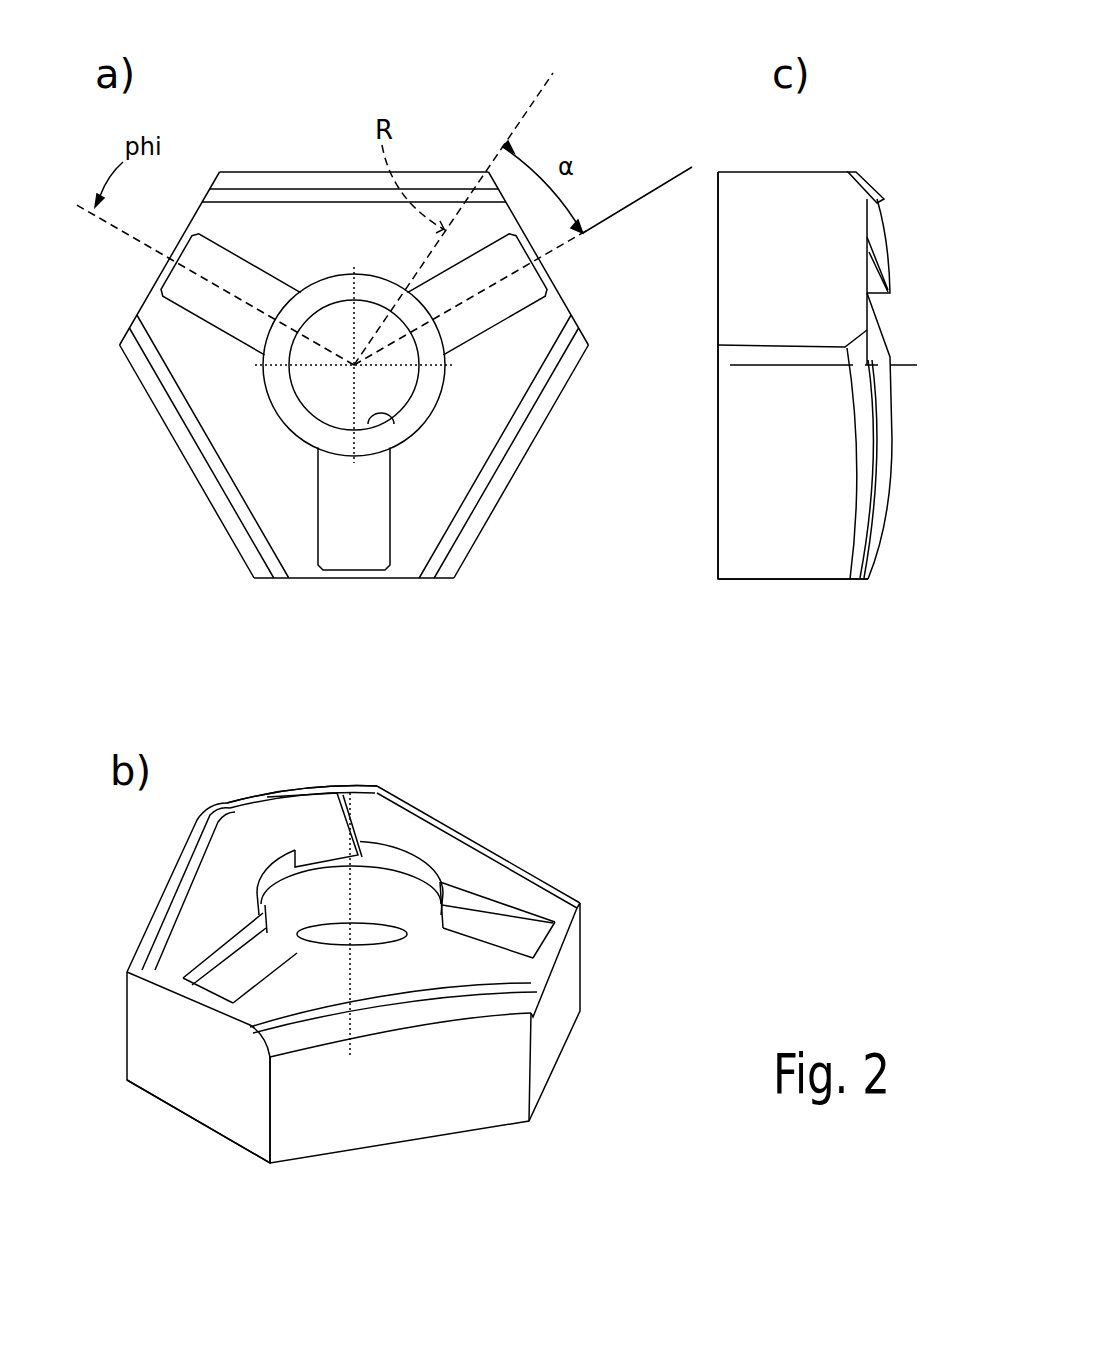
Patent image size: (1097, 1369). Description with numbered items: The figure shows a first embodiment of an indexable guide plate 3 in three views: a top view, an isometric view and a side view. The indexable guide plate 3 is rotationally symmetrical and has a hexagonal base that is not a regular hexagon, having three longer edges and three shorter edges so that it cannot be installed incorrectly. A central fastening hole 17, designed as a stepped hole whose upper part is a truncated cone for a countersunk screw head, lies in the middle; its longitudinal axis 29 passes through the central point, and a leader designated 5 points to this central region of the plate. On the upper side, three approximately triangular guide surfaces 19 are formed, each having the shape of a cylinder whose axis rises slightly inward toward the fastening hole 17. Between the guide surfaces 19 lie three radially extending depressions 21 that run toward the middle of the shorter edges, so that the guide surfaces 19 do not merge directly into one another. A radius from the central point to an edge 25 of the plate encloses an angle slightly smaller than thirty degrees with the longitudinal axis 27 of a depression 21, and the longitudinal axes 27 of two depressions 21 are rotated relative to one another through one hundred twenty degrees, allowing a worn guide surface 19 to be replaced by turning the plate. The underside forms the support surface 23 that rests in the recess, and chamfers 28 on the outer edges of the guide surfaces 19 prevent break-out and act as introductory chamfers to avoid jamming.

The indexable guide plate 3 is at (505, 546).
The central fastening hole 5 is at (347, 322).
The central fastening hole 17 is at (394, 422).
The guide surfaces 19 is at (288, 213).
The depressions 21 is at (510, 287).
The support surface 23 is at (717, 536).
The edge 25 is at (505, 148).
The longitudinal axis of a depression 27 is at (613, 209).
The chamfers 28 is at (852, 580).
The longitudinal axis of the fastening hole 29 is at (893, 363).